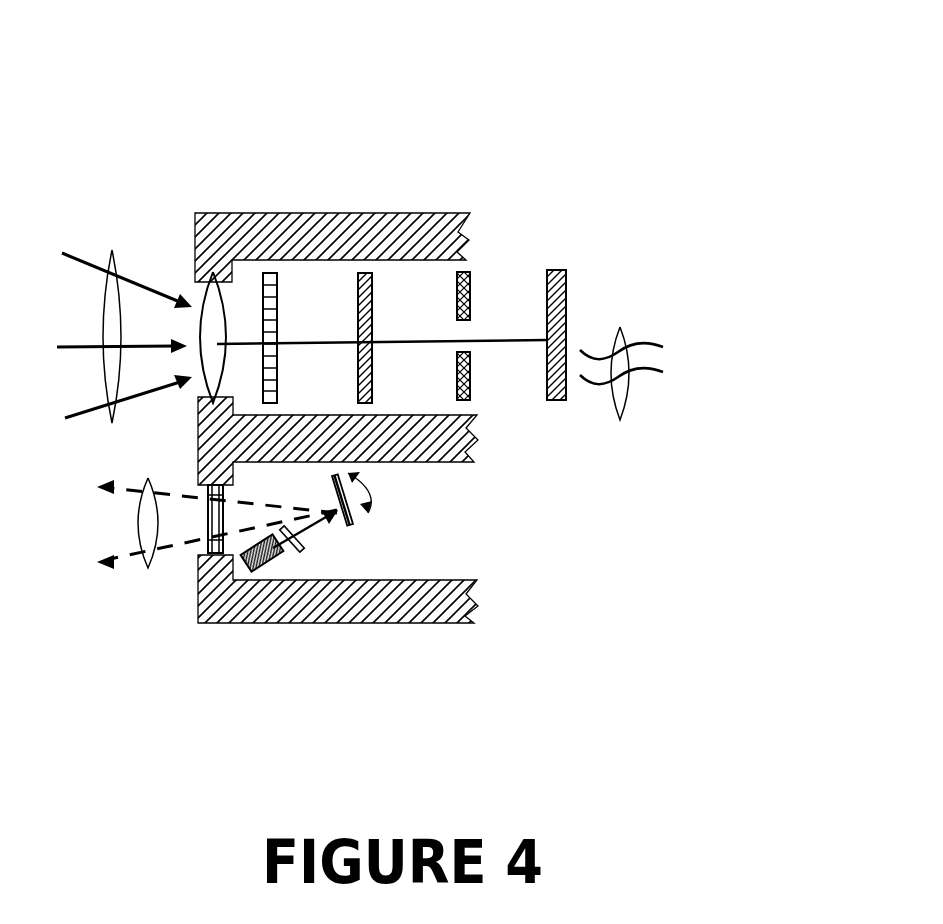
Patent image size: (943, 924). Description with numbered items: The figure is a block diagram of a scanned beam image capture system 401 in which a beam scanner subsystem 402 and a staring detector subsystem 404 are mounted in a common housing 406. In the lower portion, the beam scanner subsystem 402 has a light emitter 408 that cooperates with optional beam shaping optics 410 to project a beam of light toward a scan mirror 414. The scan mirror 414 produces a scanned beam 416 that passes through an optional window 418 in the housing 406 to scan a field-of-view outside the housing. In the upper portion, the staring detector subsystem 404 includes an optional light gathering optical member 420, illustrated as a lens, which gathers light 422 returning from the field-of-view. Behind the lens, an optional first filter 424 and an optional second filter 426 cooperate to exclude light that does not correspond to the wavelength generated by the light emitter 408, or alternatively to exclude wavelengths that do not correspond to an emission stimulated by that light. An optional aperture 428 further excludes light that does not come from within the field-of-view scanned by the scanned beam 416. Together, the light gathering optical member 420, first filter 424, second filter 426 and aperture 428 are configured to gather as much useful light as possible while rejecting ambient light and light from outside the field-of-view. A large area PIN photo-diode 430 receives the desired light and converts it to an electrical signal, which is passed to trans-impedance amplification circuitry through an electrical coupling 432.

The scanned beam image capture system 401 is at (743, 63).
The beam scanner subsystem 402 is at (583, 552).
The staring detector subsystem 404 is at (658, 292).
The housing 406 is at (478, 435).
The light emitter 408 is at (268, 572).
The beam shaping optics 410 is at (302, 539).
The scan mirror 414 is at (352, 527).
The scanned beam 416 is at (148, 568).
The window 418 is at (210, 500).
The light gathering optical member 420 is at (200, 308).
The light 422 is at (112, 250).
The first filter 424 is at (277, 300).
The second filter 426 is at (373, 300).
The aperture 428 is at (471, 290).
The large area PIN photo-diode 430 is at (580, 258).
The electrical coupling 432 is at (620, 420).